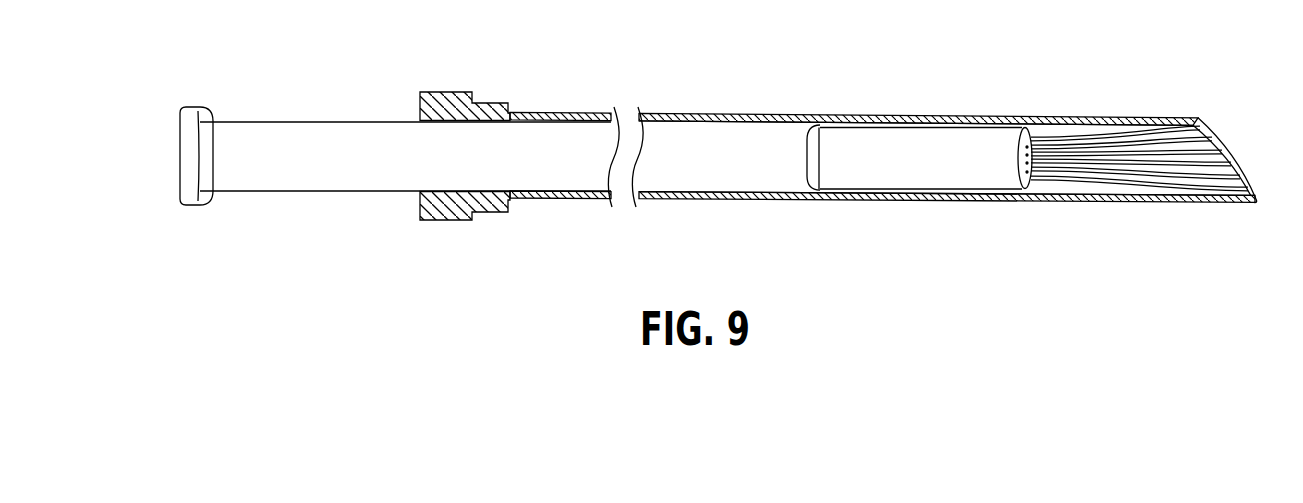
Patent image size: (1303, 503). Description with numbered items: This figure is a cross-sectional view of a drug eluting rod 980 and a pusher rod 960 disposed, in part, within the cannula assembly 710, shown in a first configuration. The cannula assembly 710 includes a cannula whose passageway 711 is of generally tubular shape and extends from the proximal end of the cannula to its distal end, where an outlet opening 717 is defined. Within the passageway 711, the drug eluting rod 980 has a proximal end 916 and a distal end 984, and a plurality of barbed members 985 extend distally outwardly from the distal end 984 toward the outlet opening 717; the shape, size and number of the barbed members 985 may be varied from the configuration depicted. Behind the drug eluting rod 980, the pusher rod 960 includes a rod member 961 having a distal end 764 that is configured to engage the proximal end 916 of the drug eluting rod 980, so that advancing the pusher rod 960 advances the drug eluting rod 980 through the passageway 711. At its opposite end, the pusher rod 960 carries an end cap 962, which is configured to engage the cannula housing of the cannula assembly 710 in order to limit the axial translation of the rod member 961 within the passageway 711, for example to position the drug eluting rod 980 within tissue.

The pusher rod 960 is at (356, 156).
The rod member 961 is at (293, 183).
The end cap 962 is at (181, 160).
The cannula assembly 710 is at (855, 138).
The passageway 711 is at (1067, 132).
The outlet opening 717 is at (1222, 137).
The distal end 764 is at (795, 182).
The proximal end 916 is at (832, 175).
The drug eluting rod 980 is at (1107, 154).
The distal end 984 is at (1010, 178).
The barbed members 985 is at (1133, 133).